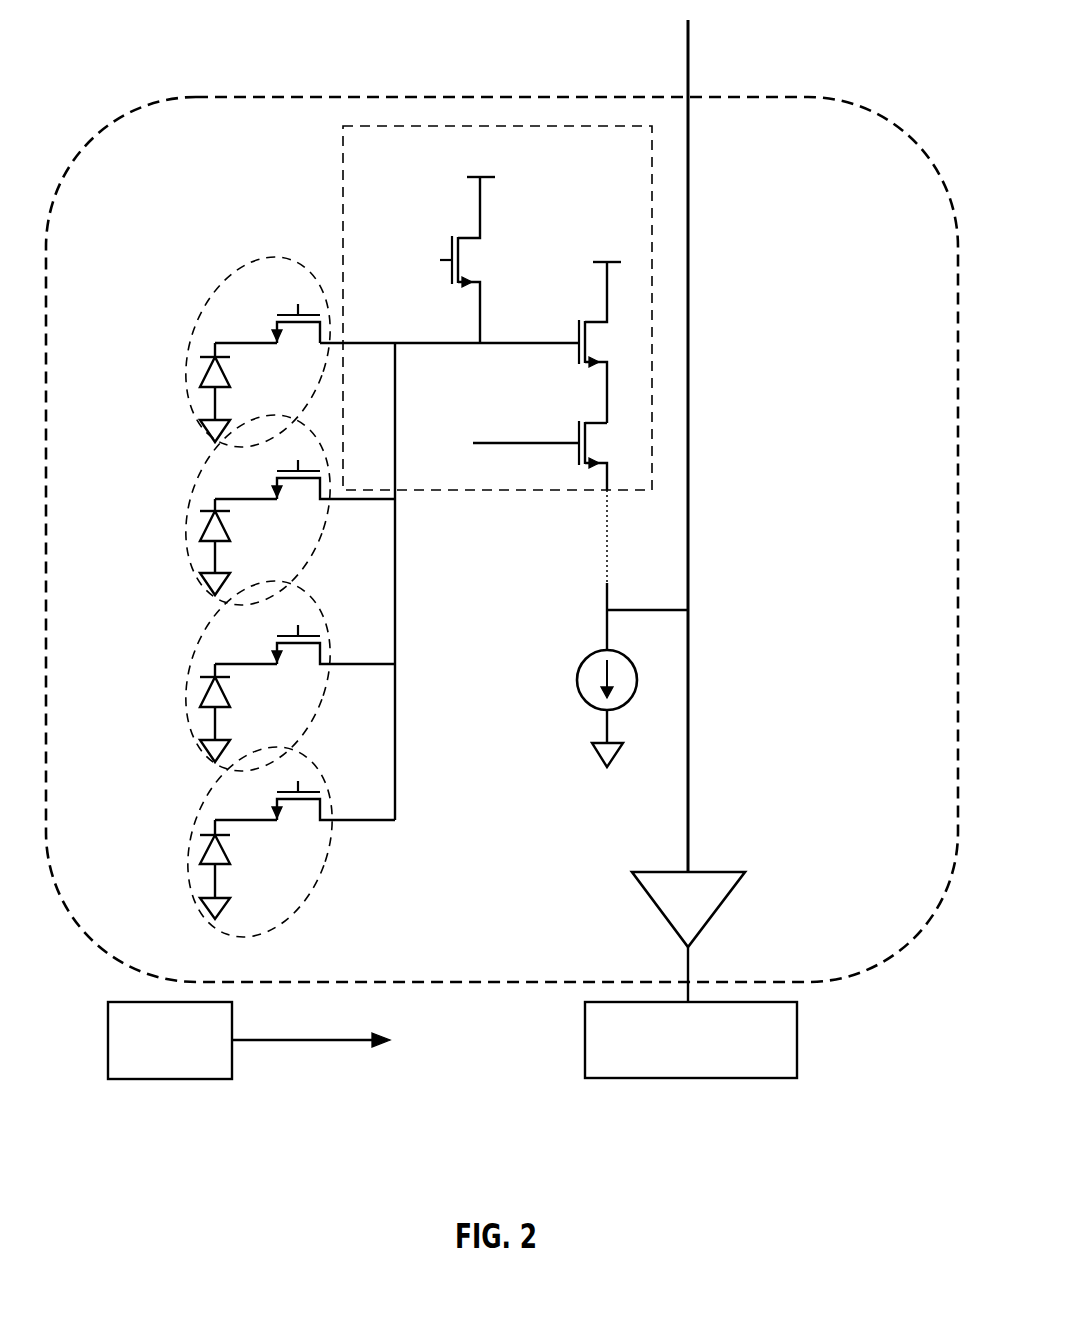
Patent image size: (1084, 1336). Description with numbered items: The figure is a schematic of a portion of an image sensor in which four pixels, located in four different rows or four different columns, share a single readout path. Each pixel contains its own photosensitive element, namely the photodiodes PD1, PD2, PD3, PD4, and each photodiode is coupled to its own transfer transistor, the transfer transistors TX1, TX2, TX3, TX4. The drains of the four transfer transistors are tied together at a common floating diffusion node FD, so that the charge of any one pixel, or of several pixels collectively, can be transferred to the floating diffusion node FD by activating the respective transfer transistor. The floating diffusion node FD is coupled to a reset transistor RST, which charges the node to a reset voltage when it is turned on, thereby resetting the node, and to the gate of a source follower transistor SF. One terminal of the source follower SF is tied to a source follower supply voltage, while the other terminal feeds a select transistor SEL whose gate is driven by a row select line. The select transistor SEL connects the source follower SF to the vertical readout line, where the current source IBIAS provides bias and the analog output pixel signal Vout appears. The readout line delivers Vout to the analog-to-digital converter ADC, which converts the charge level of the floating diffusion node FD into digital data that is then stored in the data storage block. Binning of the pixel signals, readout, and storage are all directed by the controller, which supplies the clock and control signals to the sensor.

The analog-to-digital converter ADC is at (688, 909).
The element controller is at (266, 1040).
The floating diffusion node FD is at (397, 566).
The reset transistor RST is at (440, 260).
The source follower transistor SF is at (602, 342).
The select transistor SEL is at (568, 452).
The analog output pixel signal Vout is at (647, 570).
The current source IBIAS is at (572, 705).
The transfer transistor TX1 is at (297, 309).
The transfer transistor TX2 is at (305, 464).
The transfer transistor TX3 is at (305, 629).
The transfer transistor TX4 is at (305, 787).
The photodiode PD1 is at (183, 392).
The photodiode PD2 is at (183, 547).
The photodiode PD3 is at (183, 713).
The photodiode PD4 is at (183, 869).